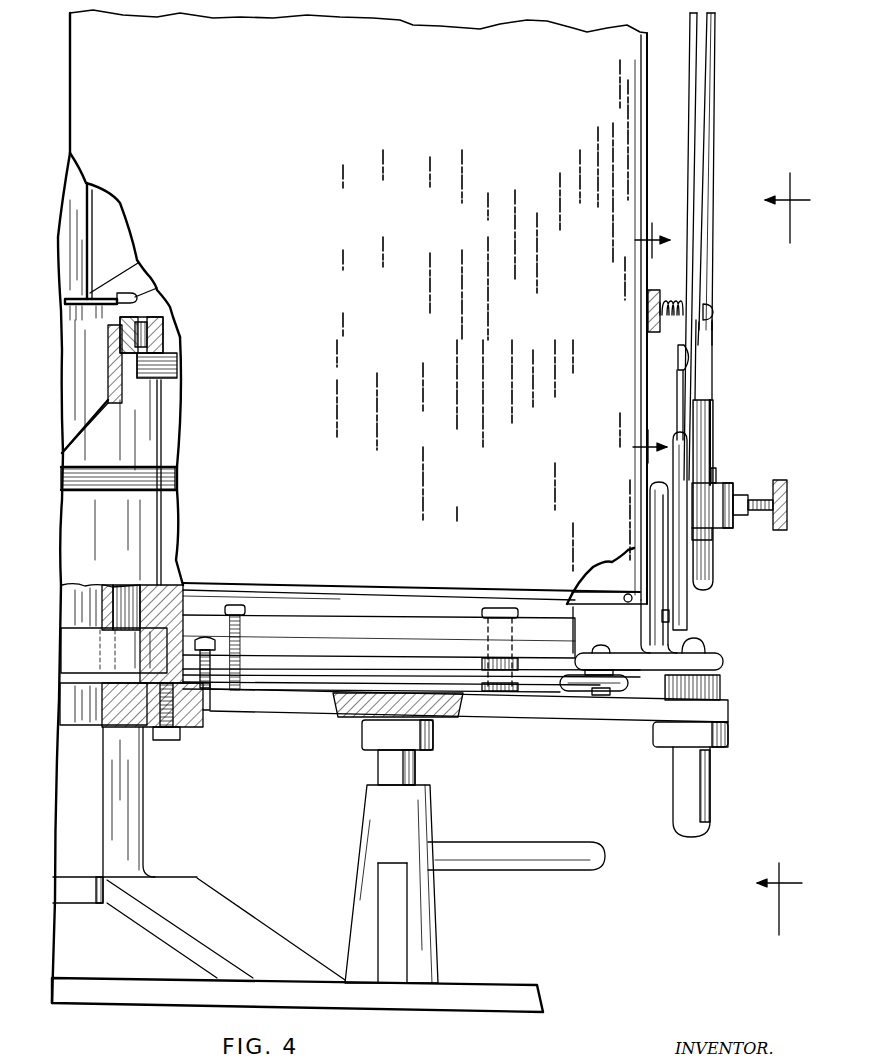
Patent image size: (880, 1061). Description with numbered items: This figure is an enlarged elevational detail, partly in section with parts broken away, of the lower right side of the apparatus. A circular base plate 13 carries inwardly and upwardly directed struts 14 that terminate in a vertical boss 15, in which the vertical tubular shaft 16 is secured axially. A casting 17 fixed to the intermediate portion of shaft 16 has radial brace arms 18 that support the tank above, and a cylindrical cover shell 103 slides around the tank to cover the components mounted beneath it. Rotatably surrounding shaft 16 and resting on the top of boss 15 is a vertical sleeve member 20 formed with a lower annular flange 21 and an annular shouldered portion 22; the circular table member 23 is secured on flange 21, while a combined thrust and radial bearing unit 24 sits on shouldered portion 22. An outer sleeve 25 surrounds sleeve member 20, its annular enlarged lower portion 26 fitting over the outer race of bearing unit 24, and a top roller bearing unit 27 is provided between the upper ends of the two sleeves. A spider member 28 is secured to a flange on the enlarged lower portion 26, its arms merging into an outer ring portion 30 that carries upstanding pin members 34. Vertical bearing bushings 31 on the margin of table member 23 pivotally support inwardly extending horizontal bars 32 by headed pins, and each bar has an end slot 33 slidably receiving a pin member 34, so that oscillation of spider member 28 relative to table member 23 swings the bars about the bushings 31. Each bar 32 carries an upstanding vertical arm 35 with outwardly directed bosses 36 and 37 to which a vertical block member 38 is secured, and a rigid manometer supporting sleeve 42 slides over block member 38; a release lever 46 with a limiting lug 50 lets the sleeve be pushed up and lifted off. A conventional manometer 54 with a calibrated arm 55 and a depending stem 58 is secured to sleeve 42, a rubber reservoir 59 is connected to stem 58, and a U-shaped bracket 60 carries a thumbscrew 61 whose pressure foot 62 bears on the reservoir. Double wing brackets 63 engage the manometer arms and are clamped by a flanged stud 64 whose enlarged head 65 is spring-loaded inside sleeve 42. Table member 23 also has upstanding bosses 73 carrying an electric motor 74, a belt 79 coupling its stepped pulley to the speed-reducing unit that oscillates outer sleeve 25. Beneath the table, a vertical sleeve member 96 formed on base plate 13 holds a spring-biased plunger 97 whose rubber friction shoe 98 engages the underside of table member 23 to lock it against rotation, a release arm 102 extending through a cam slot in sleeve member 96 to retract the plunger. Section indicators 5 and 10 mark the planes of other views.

The section line 5- 5 is at (783, 554).
The section line 10- 10 is at (638, 343).
The base plate 13 is at (530, 1003).
The struts 14 is at (228, 925).
The vertical boss 15 is at (105, 818).
The tubular shaft 16 is at (78, 695).
The casting 17 is at (75, 273).
The radial brace arms 18 is at (122, 288).
The sleeve member 20 is at (110, 368).
The annular flange 21 is at (200, 728).
The annular shouldered portion 22 is at (135, 705).
The table member 23 is at (710, 712).
The bearing unit 24 is at (78, 637).
The outer sleeve 25 is at (83, 541).
The annular enlarged lower portion 26 is at (170, 620).
The top roller bearing unit 27 is at (160, 325).
The spider member 28 is at (285, 683).
The outer ring portion 30 is at (565, 680).
The bearing bushings 31 is at (695, 770).
The horizontal bar 32 is at (630, 655).
The slot 33 is at (585, 652).
The pin members 34 is at (604, 648).
The vertical arm 35 is at (658, 518).
The boss 36 is at (668, 614).
The boss 37 is at (662, 495).
The block member 38 is at (675, 475).
The manometer supporting sleeve 42 is at (697, 85).
The release lever 46 is at (678, 395).
The lug 50 is at (688, 358).
The manometer 54 is at (713, 332).
The calibrated vertical arm portion 55 is at (707, 245).
The stem 58 is at (703, 380).
The rubber reservoir 59 is at (700, 453).
The U-shaped bracket 60 is at (722, 520).
The thumbscrew 61 is at (784, 525).
The pressure foot 62 is at (716, 478).
The double wing bracket 63 is at (712, 306).
The flanged stud 64 is at (668, 317).
The enlarged head 65 is at (655, 295).
The upstanding bosses 73 is at (237, 690).
The electric motor 74 is at (425, 610).
The belt 79 is at (135, 482).
The sleeve member 96 is at (405, 828).
The plunger 97 is at (393, 762).
The rubber friction shoe 98 is at (410, 745).
The release arm 102 is at (515, 853).
The cover shell 103 is at (613, 185).